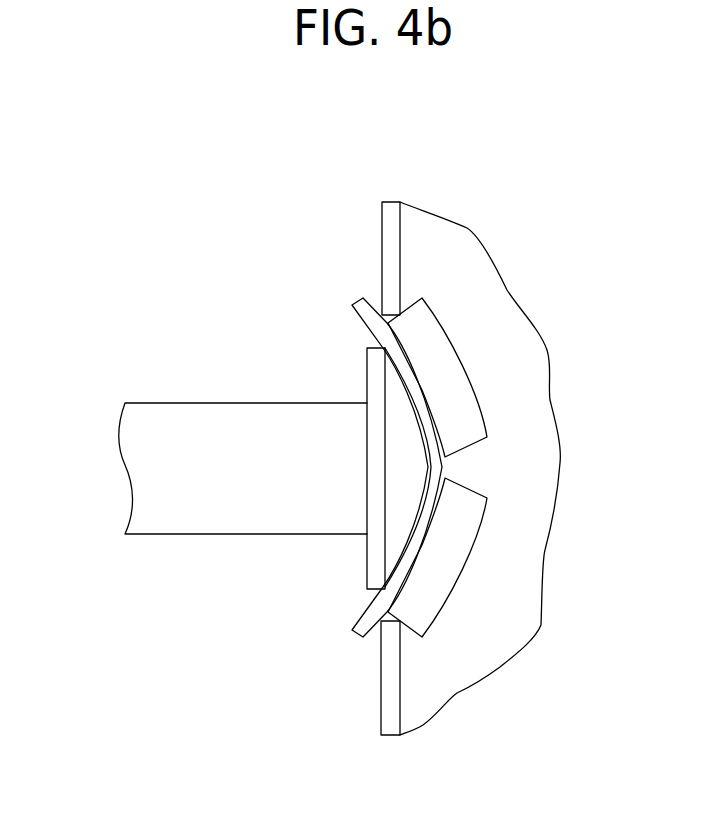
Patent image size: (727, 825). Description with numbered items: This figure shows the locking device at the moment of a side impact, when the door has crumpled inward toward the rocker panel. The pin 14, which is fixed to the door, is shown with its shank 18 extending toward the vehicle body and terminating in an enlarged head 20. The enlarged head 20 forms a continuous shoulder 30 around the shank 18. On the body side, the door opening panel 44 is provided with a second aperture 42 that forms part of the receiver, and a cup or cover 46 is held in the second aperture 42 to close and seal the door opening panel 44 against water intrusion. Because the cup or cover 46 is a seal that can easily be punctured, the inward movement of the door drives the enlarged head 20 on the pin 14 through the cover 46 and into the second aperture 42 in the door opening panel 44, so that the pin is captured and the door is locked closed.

The pin 14 is at (157, 567).
The shank 18 is at (198, 430).
The enlarged head 20 is at (387, 550).
The continuous shoulder 30 is at (367, 383).
The second aperture 42 is at (380, 623).
The door opening panel 44 is at (433, 267).
The cup or cover 46 is at (455, 388).